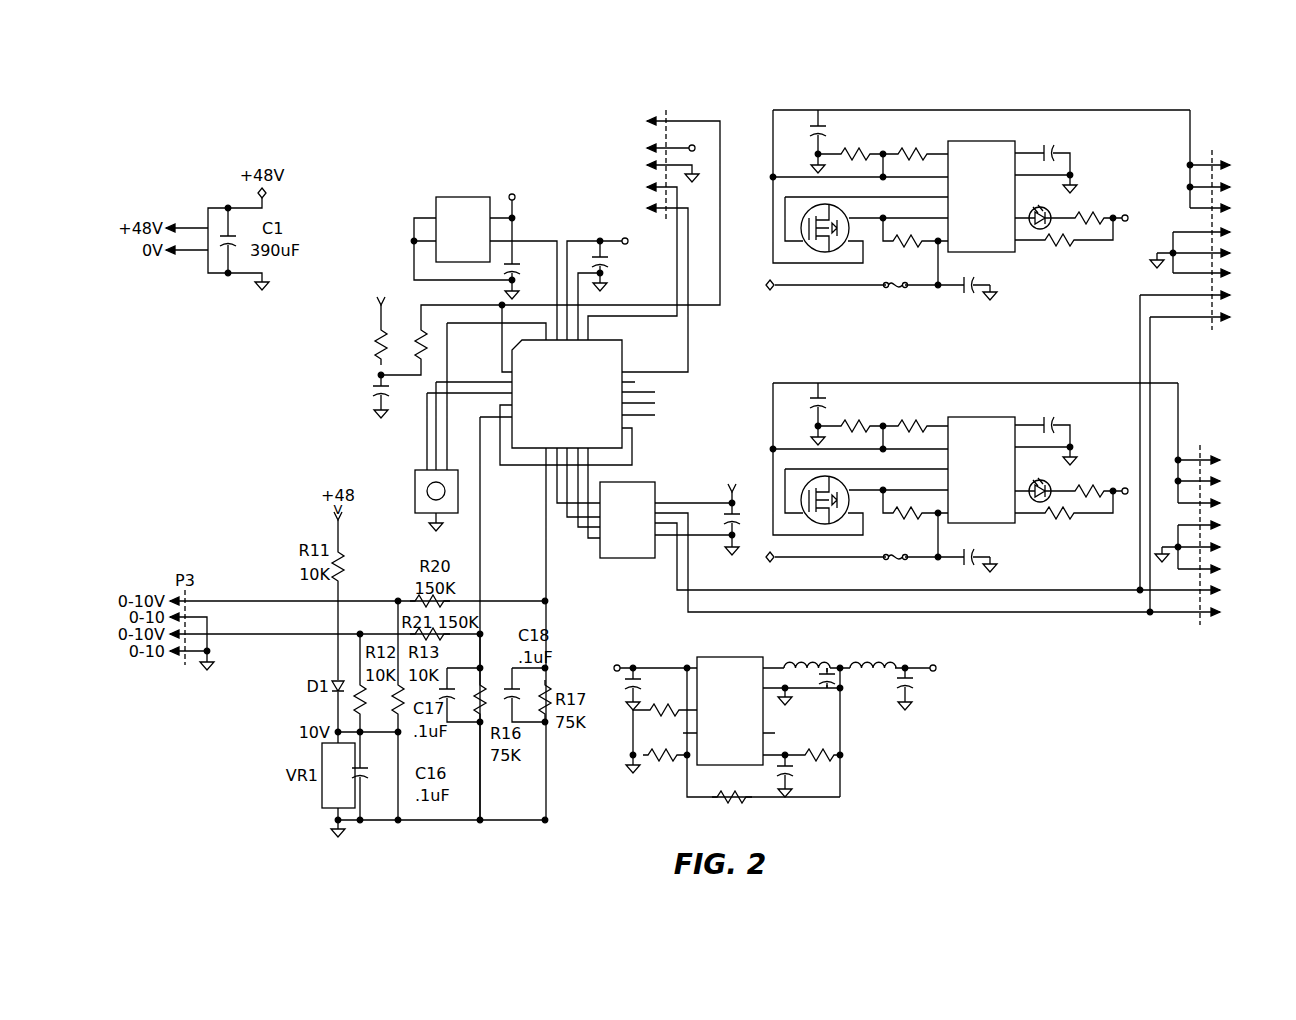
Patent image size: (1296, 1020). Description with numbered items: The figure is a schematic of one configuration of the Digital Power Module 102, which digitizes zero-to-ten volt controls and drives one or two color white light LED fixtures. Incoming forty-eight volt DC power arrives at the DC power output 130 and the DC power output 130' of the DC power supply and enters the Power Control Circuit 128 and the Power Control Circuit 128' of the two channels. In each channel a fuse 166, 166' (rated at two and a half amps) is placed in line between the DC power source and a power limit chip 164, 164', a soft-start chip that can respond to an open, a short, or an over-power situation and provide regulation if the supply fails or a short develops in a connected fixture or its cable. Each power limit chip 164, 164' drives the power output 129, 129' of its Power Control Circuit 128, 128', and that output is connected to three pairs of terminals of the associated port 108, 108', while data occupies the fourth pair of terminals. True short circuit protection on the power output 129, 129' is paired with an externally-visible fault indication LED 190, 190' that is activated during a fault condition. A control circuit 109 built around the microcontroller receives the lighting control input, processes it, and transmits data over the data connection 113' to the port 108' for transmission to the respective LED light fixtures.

The Digital Power Module 102 is at (980, 765).
The port 108 is at (1215, 202).
The port 108' is at (1213, 503).
The control circuit 109 is at (592, 608).
The data connection 113' is at (971, 491).
The Power Control Circuit 128 is at (959, 200).
The Power Control Circuit 128' is at (962, 490).
The power output 129 is at (1050, 182).
The power output 129' is at (1050, 454).
The DC power output 130 is at (807, 304).
The DC power output 130' is at (816, 571).
The power limit chip 164 is at (1021, 222).
The power limit chip 164' is at (1024, 495).
The fuse 166 is at (882, 311).
The fuse 166' is at (932, 601).
The fault indication LED 190 is at (1087, 191).
The fault indication LED 190' is at (1090, 457).